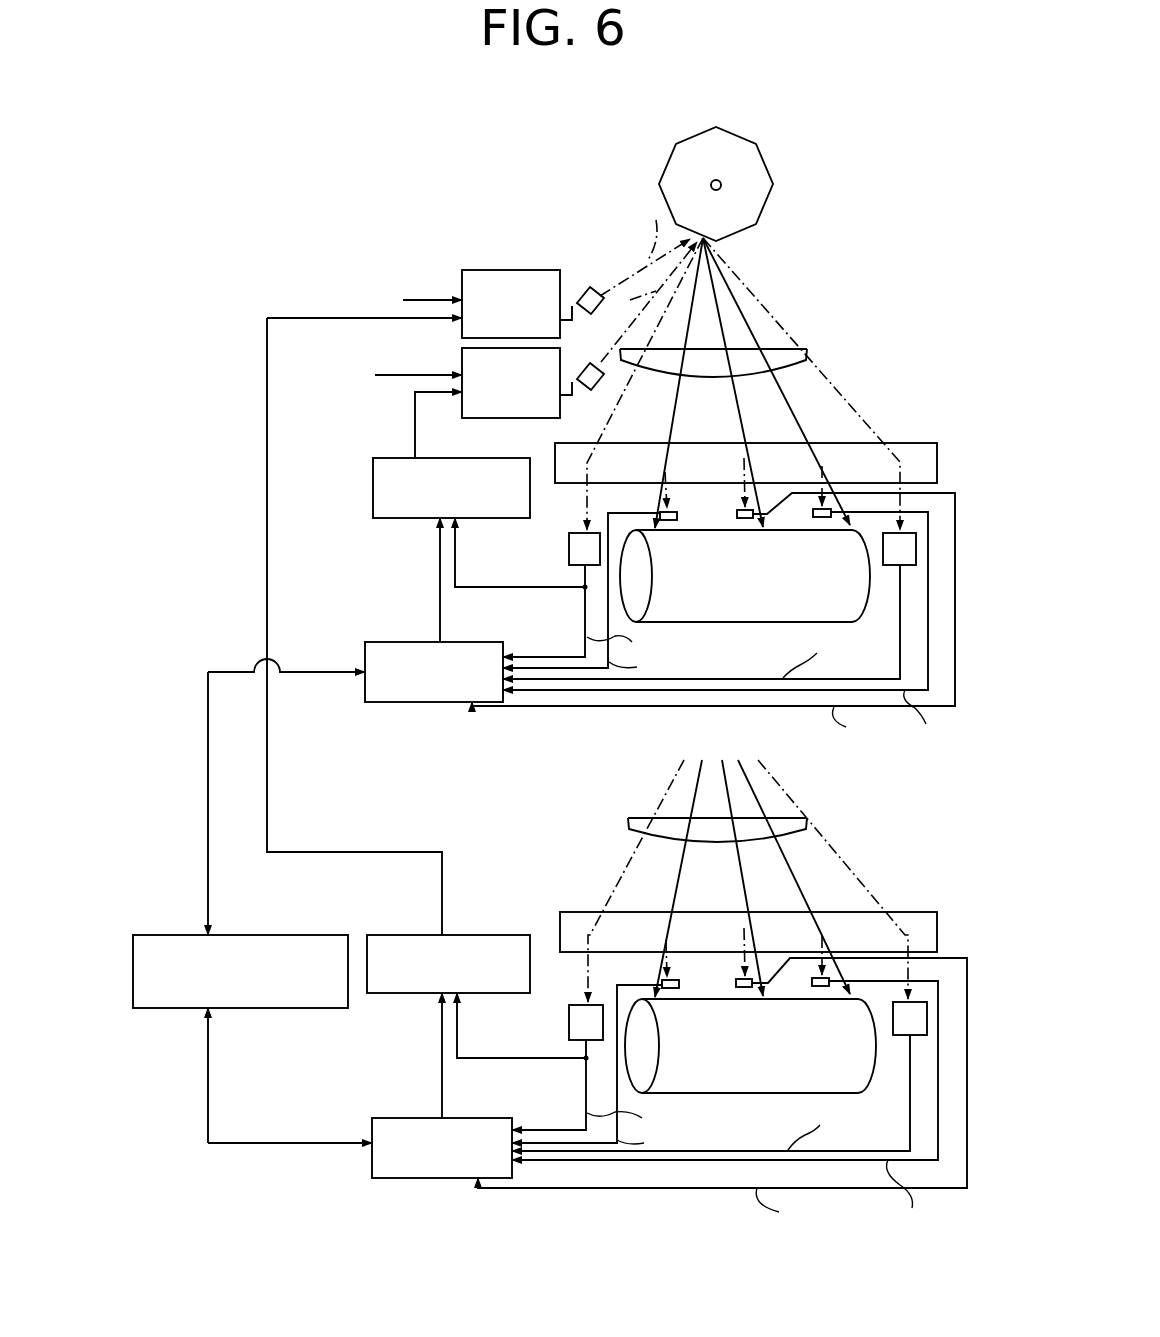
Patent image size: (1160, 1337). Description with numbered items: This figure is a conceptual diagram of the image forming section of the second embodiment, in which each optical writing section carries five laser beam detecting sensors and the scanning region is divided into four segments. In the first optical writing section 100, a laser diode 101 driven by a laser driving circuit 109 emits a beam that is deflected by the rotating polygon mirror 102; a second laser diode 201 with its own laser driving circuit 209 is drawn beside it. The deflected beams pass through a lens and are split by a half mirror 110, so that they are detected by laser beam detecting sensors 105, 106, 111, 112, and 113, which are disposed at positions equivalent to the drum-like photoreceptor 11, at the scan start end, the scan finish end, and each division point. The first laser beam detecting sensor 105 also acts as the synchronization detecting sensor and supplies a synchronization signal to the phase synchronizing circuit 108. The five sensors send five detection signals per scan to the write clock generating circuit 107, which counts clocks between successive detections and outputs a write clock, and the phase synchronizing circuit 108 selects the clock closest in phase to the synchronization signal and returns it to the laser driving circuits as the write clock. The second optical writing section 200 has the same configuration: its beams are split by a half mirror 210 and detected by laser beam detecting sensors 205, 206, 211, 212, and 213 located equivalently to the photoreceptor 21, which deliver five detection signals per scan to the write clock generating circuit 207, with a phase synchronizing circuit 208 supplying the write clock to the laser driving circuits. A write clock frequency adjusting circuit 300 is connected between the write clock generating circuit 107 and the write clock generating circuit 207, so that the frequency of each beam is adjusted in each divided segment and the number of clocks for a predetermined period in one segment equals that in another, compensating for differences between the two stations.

The first optical writing section 100 is at (953, 240).
The polygon mirror 102 is at (763, 212).
The laser driving circuit (red) 209 is at (503, 269).
The semiconductor laser (red) 201 is at (582, 286).
The laser diode 101 is at (584, 365).
The laser driving circuit 109 is at (528, 418).
The phase synchronizing circuit 108 is at (373, 488).
The half mirror 110 is at (918, 442).
The first laser beam detecting sensor 105 is at (568, 539).
The write clock generating circuit 107 is at (433, 703).
The second laser beam detecting sensor 106 is at (677, 512).
The laser beam detecting sensor 111 is at (737, 514).
The laser beam detecting sensor 112 is at (813, 512).
The laser beam detecting sensor 113 is at (893, 568).
The photoreceptor 11 is at (762, 596).
The second optical writing section 200 is at (935, 828).
The half mirror 210 is at (905, 912).
The phase synchronizing circuit 208 is at (463, 935).
The laser beam detecting sensor 205 is at (568, 1010).
The write clock generating circuit 207 is at (406, 1117).
The laser beam detecting sensor 206 is at (679, 980).
The laser beam detecting sensor 211 is at (736, 983).
The laser beam detecting sensor 212 is at (812, 981).
The laser beam detecting sensor 213 is at (905, 1037).
The photoreceptor 21 is at (770, 1066).
The write clock frequency adjusting circuit 300 is at (250, 935).